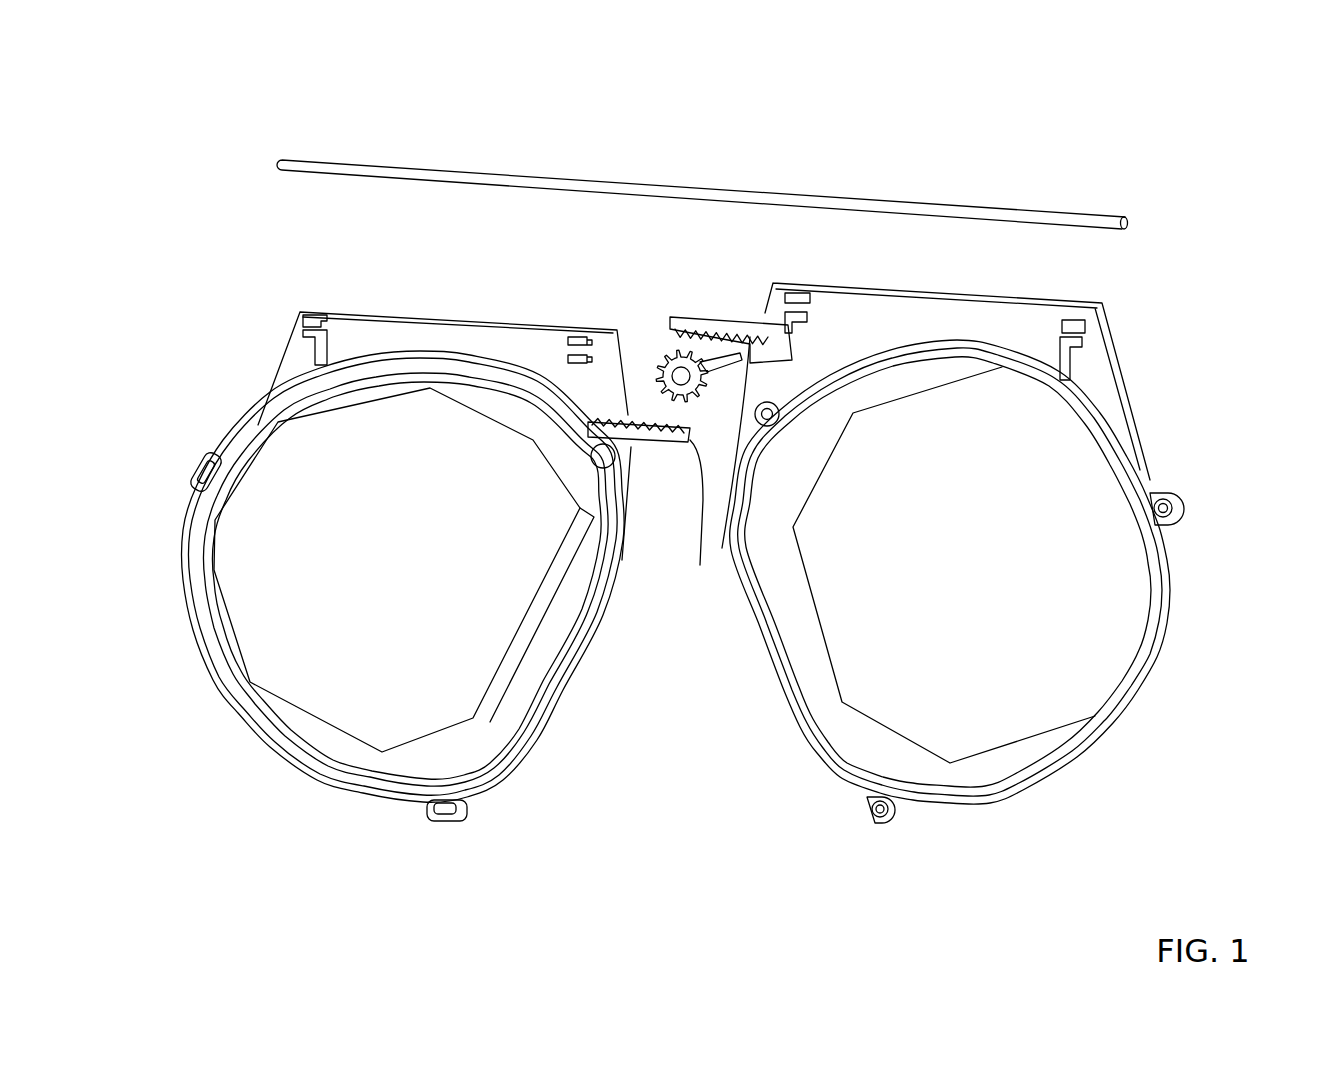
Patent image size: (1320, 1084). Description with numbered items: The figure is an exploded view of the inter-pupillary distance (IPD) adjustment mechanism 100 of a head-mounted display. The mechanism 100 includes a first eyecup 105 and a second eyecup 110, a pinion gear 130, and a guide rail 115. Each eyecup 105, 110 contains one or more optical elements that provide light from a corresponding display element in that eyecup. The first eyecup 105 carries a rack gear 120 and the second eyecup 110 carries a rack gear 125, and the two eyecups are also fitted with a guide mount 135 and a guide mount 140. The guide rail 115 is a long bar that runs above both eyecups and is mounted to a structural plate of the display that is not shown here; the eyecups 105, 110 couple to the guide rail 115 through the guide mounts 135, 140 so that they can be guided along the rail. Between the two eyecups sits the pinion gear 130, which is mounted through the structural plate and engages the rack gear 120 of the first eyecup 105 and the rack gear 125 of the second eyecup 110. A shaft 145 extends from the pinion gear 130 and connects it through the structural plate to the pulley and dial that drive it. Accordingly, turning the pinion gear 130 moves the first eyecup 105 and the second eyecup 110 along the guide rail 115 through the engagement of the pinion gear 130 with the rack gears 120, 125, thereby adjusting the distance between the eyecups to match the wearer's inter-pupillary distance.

The inter-pupillary distance (IPD) adjustment mechanism 100 is at (695, 462).
The first eyecup 105 is at (315, 776).
The second eyecup 110 is at (855, 754).
The guide rail 115 is at (1012, 212).
The rack gear 120 is at (689, 446).
The rack gear 125 is at (765, 326).
The pinion gear 130 is at (667, 370).
The guide mount 135 is at (312, 325).
The guide mount 140 is at (1080, 327).
The shaft 145 is at (717, 362).